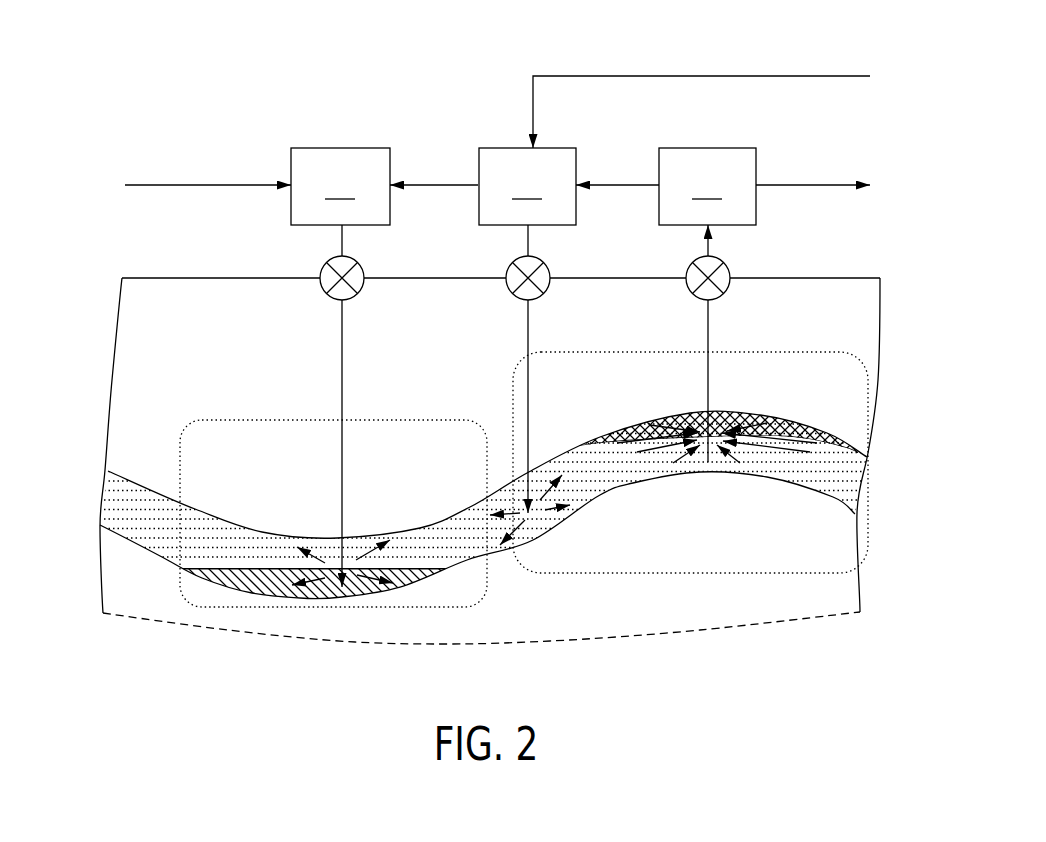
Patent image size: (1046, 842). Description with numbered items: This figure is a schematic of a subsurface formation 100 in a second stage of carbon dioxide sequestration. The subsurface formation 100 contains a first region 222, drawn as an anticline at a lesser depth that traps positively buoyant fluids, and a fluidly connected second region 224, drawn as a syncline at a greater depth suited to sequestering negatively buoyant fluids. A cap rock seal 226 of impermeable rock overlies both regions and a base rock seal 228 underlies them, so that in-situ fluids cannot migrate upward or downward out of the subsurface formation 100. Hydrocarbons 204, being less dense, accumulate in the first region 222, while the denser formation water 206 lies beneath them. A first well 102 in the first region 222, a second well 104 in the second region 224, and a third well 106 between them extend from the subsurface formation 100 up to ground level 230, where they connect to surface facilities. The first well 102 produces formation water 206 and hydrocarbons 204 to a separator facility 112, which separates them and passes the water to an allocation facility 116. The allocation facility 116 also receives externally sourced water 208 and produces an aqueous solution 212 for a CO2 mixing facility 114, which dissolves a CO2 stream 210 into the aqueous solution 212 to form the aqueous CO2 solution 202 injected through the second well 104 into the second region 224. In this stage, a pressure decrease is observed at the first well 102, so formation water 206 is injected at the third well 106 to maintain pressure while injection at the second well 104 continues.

The subsurface formation 100 is at (895, 315).
The first well 102 is at (710, 370).
The second well 104 is at (352, 495).
The third well 106 is at (540, 430).
The separator facility 112 is at (707, 186).
The CO2 mixing facility 114 is at (340, 186).
The allocation facility 116 is at (527, 186).
The aqueous CO2 solution 202 is at (342, 350).
The hydrocarbons 204 is at (803, 185).
The formation water 206 is at (612, 185).
The externally sourced water 208 is at (690, 76).
The CO2 stream 210 is at (160, 185).
The aqueous solution 212 is at (423, 185).
The first region 222 is at (782, 345).
The second region 224 is at (243, 395).
The cap rock seal 226 is at (160, 392).
The base rock seal 228 is at (130, 575).
The ground surface 230 is at (148, 272).